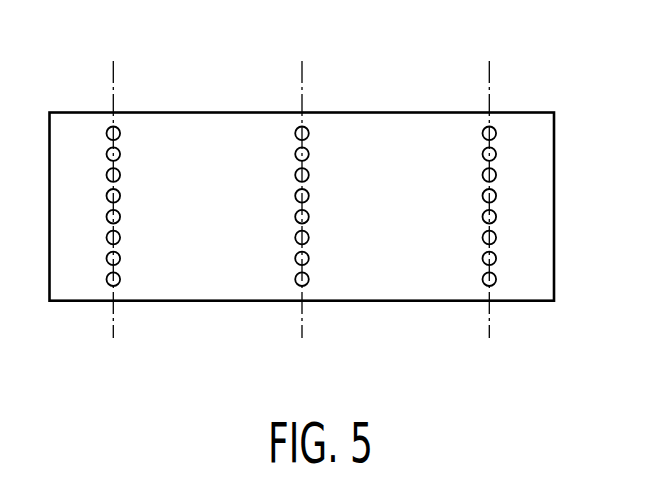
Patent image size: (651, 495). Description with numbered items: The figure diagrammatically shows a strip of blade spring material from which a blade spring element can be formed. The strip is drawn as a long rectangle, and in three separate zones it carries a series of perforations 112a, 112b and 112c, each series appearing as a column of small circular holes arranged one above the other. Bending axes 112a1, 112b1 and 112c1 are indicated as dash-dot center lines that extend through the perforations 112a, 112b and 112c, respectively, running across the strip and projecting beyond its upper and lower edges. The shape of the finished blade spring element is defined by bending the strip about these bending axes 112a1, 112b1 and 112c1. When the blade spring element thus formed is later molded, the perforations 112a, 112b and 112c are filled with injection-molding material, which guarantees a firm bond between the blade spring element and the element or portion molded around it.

The perforations 112a is at (107, 130).
The perforations 112b is at (296, 130).
The perforations 112c is at (483, 130).
The bending axis 112a1 is at (113, 323).
The bending axis 112b1 is at (302, 323).
The bending axis 112c1 is at (489, 323).